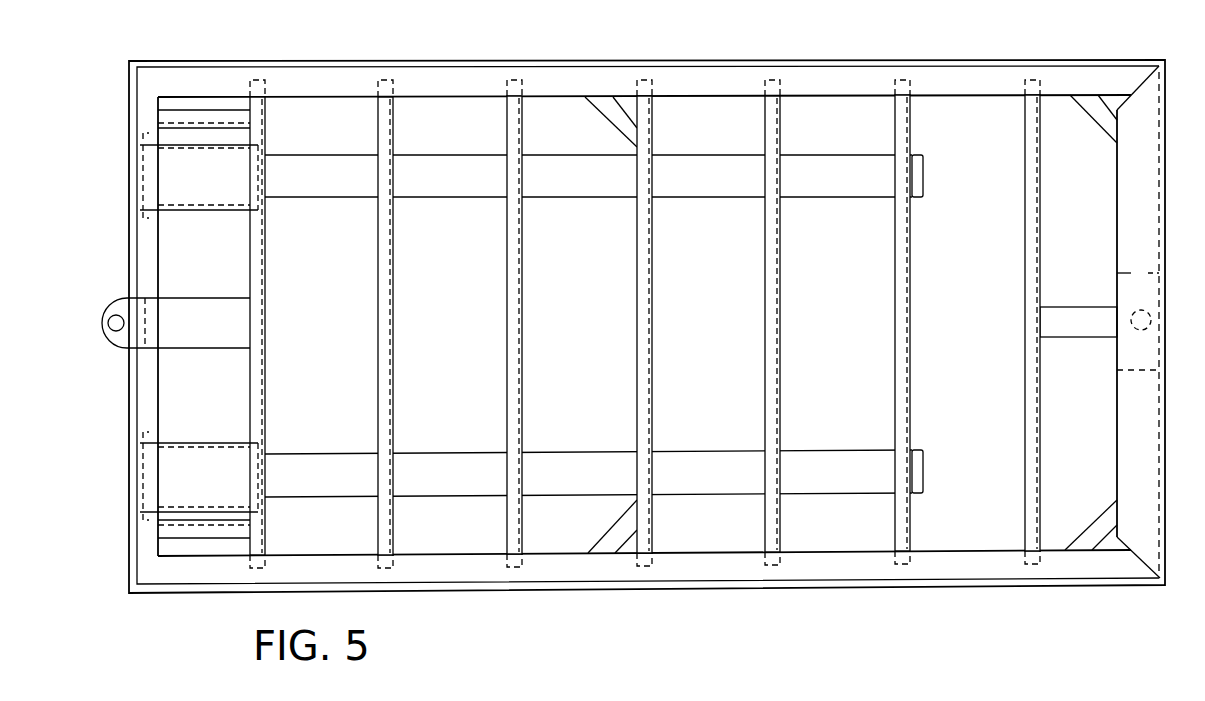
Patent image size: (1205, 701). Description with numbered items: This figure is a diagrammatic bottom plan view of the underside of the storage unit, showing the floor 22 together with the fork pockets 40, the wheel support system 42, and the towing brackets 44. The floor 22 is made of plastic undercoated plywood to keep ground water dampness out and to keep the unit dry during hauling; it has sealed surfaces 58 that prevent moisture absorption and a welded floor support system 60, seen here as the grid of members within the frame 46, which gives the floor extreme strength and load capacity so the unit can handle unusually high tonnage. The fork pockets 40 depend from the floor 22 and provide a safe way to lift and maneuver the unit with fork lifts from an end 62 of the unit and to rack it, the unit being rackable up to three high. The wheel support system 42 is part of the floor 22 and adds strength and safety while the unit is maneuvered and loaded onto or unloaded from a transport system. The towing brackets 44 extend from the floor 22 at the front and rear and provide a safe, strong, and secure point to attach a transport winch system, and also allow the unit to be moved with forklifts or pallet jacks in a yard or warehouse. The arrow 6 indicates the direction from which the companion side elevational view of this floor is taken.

The floor 22 is at (236, 50).
The end 62 is at (129, 105).
The sealed surfaces 58 is at (460, 60).
The frame 46 is at (331, 99).
The wheel support system 42 is at (603, 127).
The welded floor support system 60 is at (507, 106).
The fork pockets 40 is at (121, 181).
The towing brackets 44 is at (99, 298).
The arrow 6 is at (645, 604).